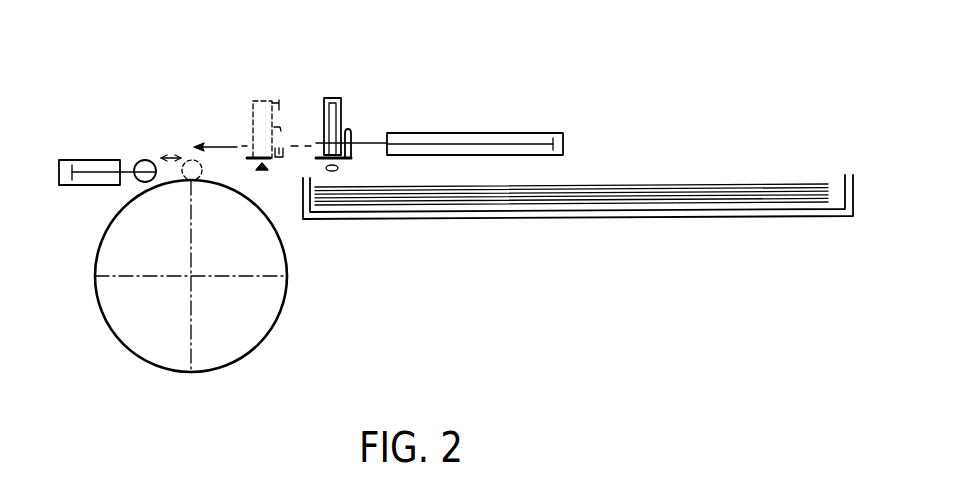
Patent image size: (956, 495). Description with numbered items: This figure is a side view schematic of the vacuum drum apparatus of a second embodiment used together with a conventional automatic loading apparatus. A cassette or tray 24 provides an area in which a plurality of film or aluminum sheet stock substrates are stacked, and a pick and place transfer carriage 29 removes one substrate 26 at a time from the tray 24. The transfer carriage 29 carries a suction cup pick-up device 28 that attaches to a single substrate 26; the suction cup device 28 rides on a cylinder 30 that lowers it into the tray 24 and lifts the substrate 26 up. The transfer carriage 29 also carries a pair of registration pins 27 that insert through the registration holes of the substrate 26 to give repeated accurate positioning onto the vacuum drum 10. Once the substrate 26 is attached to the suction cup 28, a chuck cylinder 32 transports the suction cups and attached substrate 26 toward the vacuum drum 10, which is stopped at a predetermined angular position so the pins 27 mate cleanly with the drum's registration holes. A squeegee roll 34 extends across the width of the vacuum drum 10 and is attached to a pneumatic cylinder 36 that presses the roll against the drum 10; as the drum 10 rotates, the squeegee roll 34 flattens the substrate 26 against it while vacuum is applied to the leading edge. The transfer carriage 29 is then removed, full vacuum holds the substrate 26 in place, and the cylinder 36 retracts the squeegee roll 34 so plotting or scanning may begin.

The vacuum drum 10 is at (279, 312).
The cassette or tray 24 is at (583, 218).
The substrate 26 is at (668, 185).
The registration pins 27 is at (326, 170).
The suction cup pick-up device 28 is at (340, 170).
The pick and place transfer carriage 29 is at (349, 128).
The cylinder 30 is at (324, 113).
The chuck cylinder 32 is at (429, 133).
The squeegee roll 34 is at (140, 160).
The pneumatic cylinder 36 is at (66, 160).